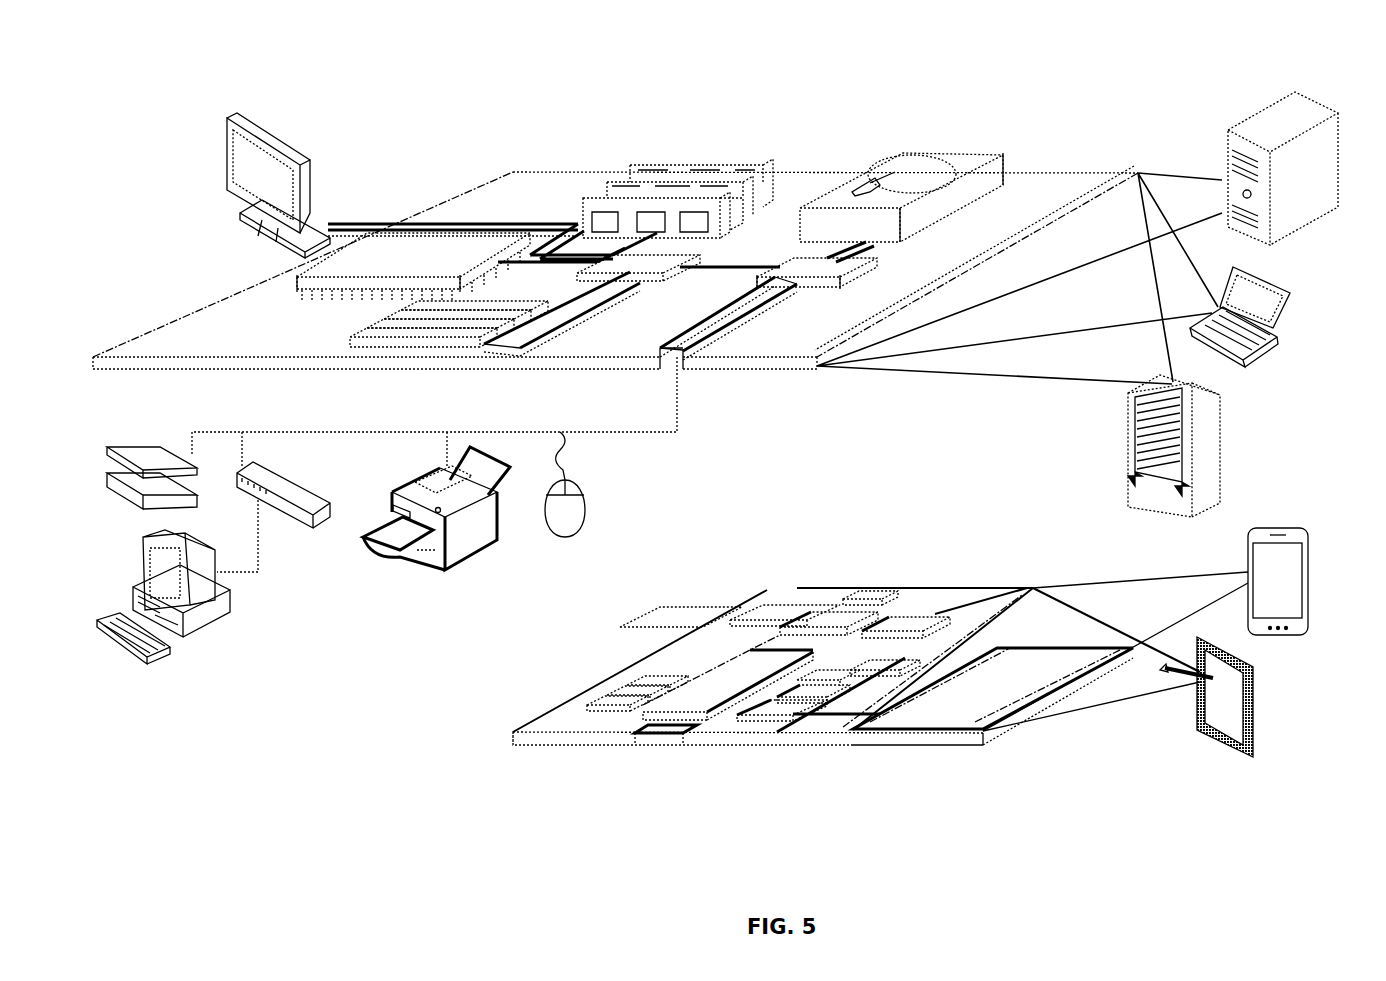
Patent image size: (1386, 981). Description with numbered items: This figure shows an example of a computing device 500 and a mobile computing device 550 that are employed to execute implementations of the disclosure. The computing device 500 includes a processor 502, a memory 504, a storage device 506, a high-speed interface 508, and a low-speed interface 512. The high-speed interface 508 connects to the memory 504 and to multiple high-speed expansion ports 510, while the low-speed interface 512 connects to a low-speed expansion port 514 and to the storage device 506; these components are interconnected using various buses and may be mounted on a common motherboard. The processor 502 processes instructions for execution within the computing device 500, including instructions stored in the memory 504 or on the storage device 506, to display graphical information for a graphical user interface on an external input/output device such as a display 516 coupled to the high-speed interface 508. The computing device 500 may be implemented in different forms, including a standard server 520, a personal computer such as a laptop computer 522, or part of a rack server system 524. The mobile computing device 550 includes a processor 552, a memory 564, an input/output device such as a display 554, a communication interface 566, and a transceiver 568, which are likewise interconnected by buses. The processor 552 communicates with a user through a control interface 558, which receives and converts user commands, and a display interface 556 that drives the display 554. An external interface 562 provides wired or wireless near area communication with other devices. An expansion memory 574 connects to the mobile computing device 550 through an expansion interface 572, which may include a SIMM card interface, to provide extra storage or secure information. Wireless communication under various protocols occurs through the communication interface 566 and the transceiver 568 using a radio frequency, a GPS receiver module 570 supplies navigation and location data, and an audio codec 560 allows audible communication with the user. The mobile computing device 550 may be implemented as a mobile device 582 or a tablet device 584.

The computing device 500 is at (331, 76).
The processor 502 is at (297, 282).
The memory 504 is at (660, 165).
The storage device 506 is at (900, 157).
The high-speed interface 508 is at (623, 266).
The high-speed expansion ports 510 is at (370, 328).
The low-speed interface 512 is at (800, 267).
The low-speed expansion port 514 is at (687, 354).
The display 516 is at (232, 127).
The standard server 520 is at (1220, 138).
The laptop computer 522 is at (1296, 300).
The rack server system 524 is at (1132, 476).
The mobile computing device 550 is at (490, 742).
The processor 552 is at (699, 706).
The display 554 is at (948, 731).
The display interface 556 is at (771, 708).
The control interface 558 is at (837, 674).
The audio codec 560 is at (840, 670).
The external interface 562 is at (663, 733).
The memory 564 is at (612, 695).
The communication interface 566 is at (830, 623).
The transceiver 568 is at (904, 618).
The GPS receiver module 570 is at (894, 589).
The expansion interface 572 is at (754, 602).
The expansion memory 574 is at (680, 600).
The mobile device 582 is at (1308, 536).
The tablet device 584 is at (1206, 740).